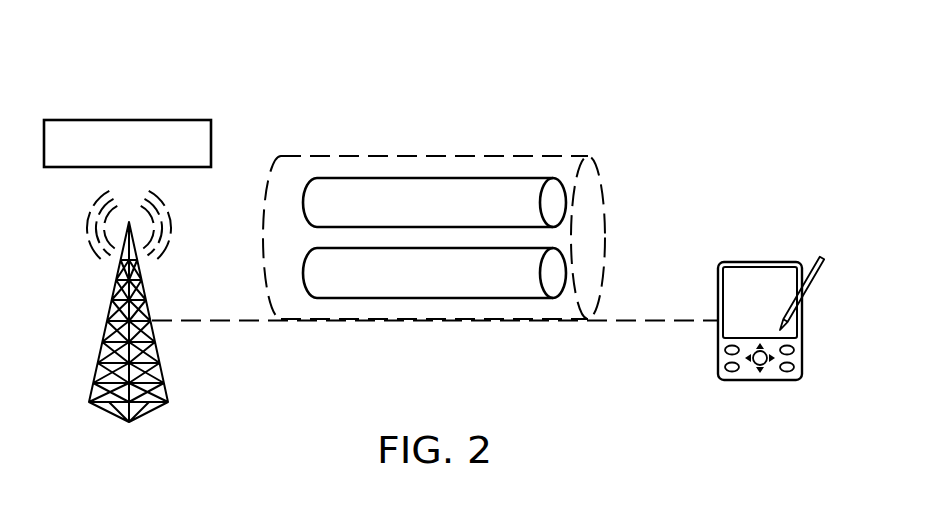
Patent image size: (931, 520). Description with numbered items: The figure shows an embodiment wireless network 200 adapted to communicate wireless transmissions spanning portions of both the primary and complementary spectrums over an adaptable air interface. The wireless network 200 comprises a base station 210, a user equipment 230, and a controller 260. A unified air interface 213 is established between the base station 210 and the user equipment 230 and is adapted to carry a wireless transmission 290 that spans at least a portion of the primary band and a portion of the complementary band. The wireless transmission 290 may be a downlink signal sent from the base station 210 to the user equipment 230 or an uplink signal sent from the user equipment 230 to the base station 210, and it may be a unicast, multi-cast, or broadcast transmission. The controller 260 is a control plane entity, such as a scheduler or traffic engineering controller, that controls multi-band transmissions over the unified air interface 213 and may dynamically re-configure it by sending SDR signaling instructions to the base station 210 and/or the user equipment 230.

The wireless network 200 is at (588, 83).
The base station 210 is at (108, 409).
The unified air interface 213 is at (432, 322).
The user equipment 230 is at (760, 381).
The controller 260 is at (127, 120).
The wireless transmission 290 is at (475, 157).